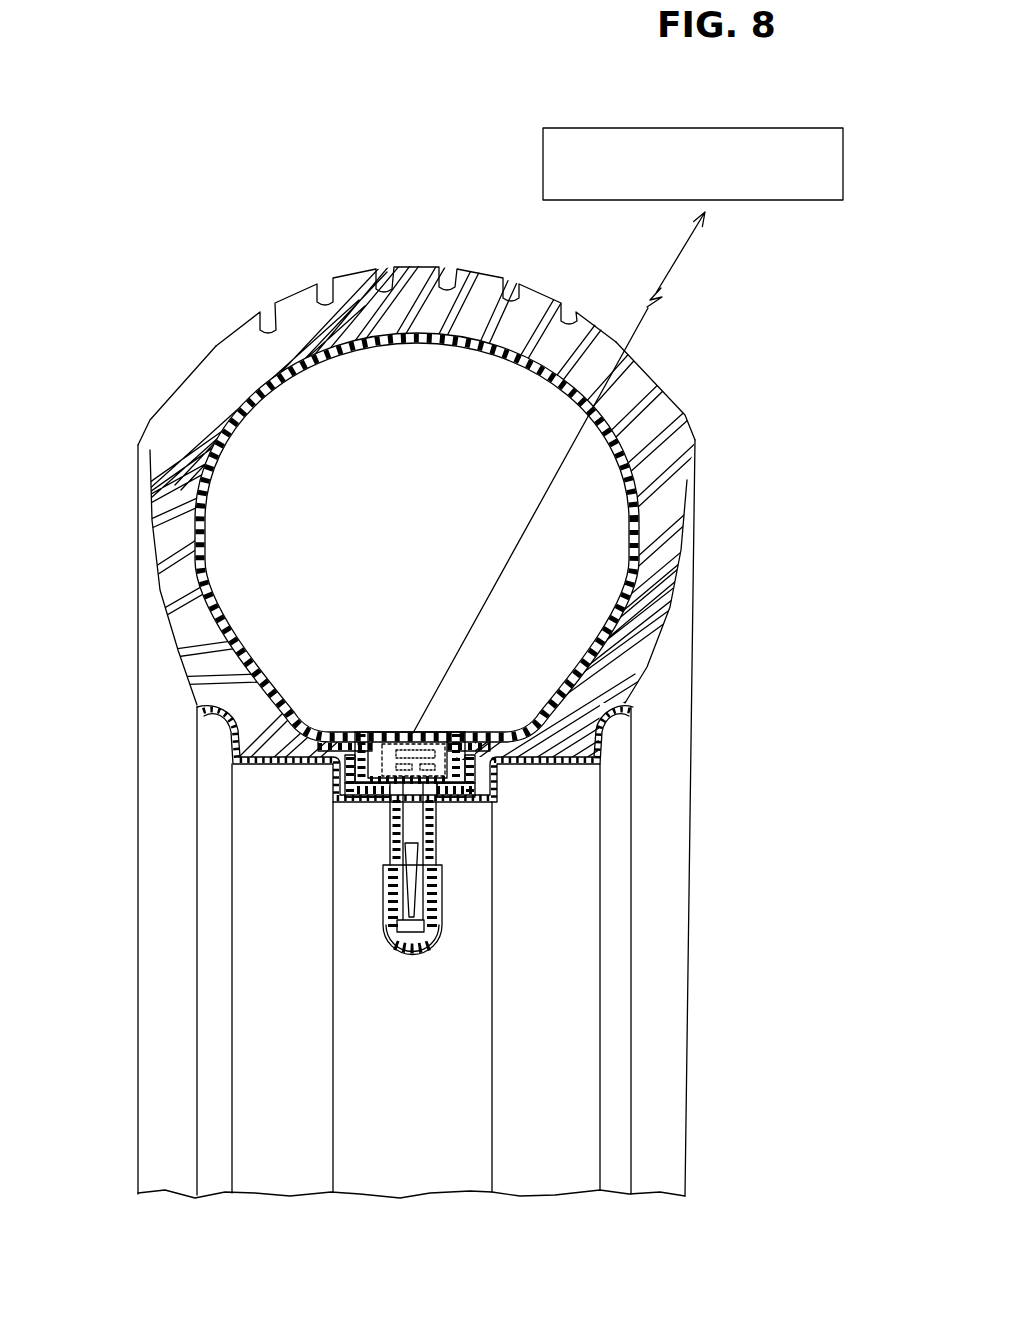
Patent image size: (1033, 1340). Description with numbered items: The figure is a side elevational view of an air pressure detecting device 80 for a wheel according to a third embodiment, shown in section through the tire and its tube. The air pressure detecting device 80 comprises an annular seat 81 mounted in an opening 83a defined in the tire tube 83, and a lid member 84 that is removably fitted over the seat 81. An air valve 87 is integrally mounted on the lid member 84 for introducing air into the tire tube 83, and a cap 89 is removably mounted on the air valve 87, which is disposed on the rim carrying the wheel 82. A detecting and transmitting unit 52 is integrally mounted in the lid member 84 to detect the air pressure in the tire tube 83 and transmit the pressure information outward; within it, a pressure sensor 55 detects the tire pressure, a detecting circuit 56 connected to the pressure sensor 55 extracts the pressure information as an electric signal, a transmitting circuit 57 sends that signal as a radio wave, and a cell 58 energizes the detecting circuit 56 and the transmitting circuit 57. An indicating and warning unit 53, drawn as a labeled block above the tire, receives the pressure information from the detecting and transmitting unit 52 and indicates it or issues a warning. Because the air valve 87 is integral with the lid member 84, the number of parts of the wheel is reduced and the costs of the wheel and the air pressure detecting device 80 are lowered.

The air pressure detecting device 80 is at (180, 234).
The annular seat 81 is at (668, 839).
The wheel 82 is at (353, 282).
The tire tube 83 is at (203, 497).
The opening 83a is at (452, 733).
The lid member 84 is at (345, 738).
The detecting and transmitting unit 52 is at (385, 718).
The indicating and warning unit 53 is at (775, 205).
The pressure sensor 55 is at (448, 735).
The detecting circuit 56 is at (388, 810).
The transmitting circuit 57 is at (458, 800).
The cell 58 is at (365, 804).
The air valve 87 is at (438, 843).
The cap 89 is at (417, 958).